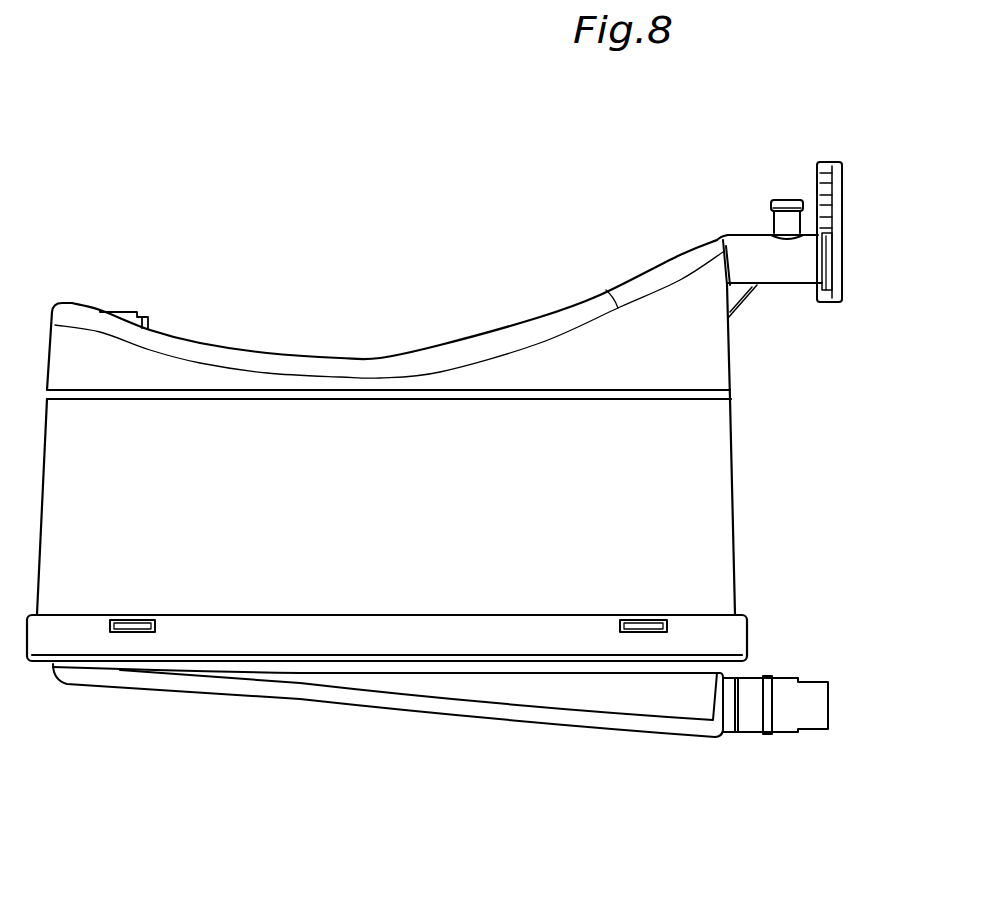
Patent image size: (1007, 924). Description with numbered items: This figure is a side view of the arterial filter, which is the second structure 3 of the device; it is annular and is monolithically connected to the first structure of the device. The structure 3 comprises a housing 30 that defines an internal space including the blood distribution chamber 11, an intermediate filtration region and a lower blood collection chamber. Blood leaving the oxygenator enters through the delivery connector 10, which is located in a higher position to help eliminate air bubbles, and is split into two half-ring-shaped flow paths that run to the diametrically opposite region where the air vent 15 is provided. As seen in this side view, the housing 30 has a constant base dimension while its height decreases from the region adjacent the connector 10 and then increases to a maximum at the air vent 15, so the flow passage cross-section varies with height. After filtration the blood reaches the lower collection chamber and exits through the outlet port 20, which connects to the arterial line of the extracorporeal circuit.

The second structure 3 is at (73, 159).
The delivery connector 10 is at (125, 310).
The blood distribution chamber 11 is at (656, 376).
The air vent 15 is at (788, 218).
The outlet port 20 is at (755, 720).
The housing 30 is at (738, 487).